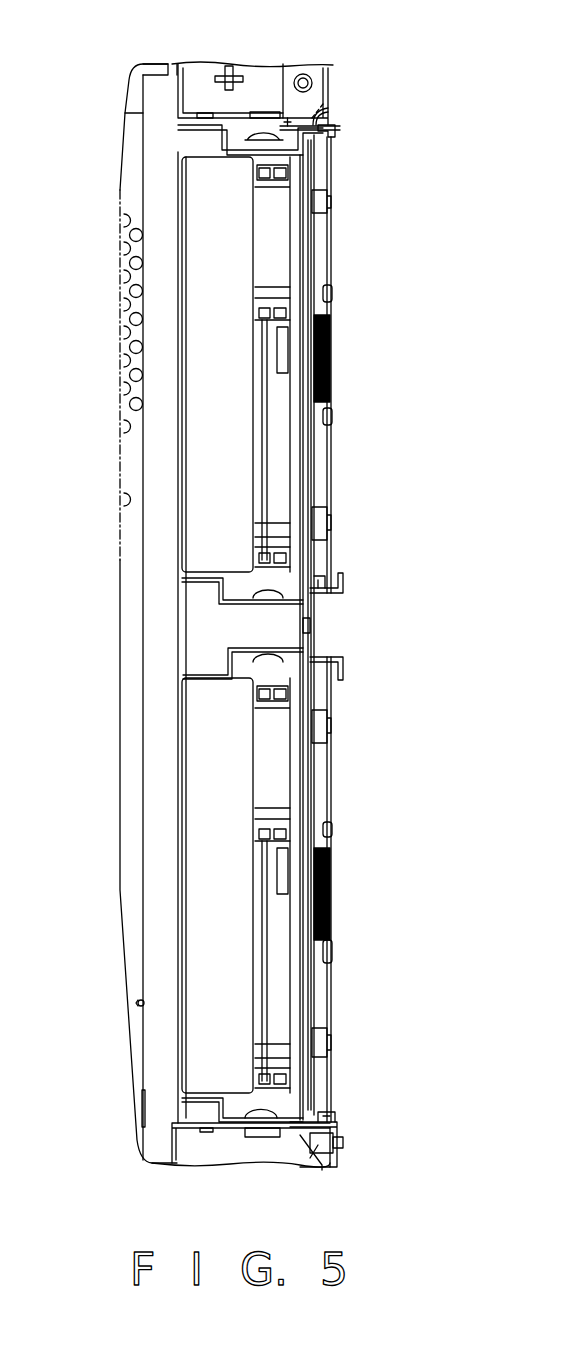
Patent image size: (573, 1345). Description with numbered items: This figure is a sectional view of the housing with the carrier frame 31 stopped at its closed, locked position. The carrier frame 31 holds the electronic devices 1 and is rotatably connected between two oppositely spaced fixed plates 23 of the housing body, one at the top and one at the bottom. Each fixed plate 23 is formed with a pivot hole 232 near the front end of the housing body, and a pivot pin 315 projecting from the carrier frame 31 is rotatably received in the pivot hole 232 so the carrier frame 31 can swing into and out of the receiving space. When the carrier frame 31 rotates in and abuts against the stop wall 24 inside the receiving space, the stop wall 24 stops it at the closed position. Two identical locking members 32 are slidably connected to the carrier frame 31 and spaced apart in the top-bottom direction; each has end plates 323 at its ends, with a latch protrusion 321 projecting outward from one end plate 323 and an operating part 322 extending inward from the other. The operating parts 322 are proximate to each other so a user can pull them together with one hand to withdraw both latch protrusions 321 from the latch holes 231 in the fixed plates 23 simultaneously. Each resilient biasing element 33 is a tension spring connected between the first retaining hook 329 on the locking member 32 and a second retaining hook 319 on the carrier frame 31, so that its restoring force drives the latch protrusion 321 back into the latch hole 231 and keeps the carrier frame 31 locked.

The electronic device 1 is at (207, 520).
The fixed plate 23 is at (232, 118).
The stop wall 24 is at (165, 493).
The carrier frame 31 is at (216, 136).
The locking member 32 is at (345, 185).
The resilient biasing element 33 is at (331, 358).
The latch hole 231 is at (325, 118).
The pivot hole 232 is at (320, 104).
The pivot pin 315 is at (262, 112).
The second retaining hook 319 is at (331, 298).
The latch protrusion 321 is at (334, 130).
The operating part 322 is at (343, 580).
The end plate 323 is at (325, 598).
The first retaining hook 329 is at (333, 418).